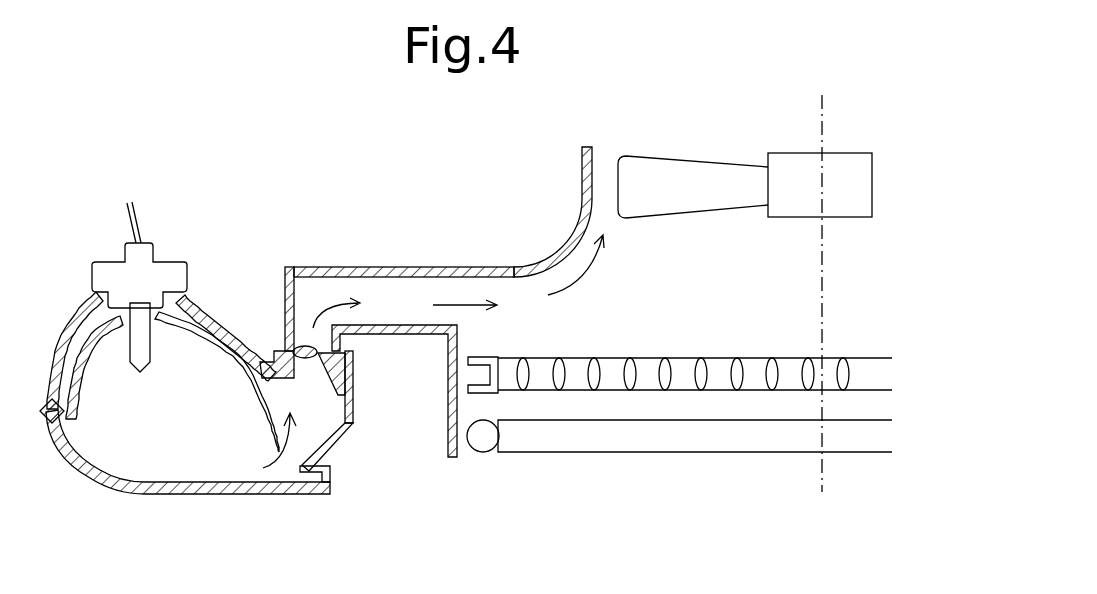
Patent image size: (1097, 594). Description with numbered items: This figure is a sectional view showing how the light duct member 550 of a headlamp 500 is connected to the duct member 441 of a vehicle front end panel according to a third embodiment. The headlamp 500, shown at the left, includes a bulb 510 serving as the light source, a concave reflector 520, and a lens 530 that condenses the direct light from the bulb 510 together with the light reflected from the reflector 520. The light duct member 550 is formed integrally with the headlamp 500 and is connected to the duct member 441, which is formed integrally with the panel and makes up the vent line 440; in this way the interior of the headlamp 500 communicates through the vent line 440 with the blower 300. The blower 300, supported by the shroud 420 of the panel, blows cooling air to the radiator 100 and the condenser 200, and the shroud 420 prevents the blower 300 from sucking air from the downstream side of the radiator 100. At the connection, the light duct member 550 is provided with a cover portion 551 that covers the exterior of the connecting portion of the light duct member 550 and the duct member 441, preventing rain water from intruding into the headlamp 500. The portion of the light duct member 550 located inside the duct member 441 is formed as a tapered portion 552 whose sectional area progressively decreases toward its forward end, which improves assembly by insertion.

The radiator 100 is at (690, 357).
The condenser 200 is at (727, 453).
The blower 300 is at (790, 218).
The shroud 420 is at (565, 240).
The vent line 440 is at (400, 305).
The duct member 441 is at (398, 334).
The headlamp 500 is at (205, 290).
The bulb 510 is at (88, 344).
The concave reflector 520 is at (210, 352).
The lens 530 is at (222, 497).
The light duct member 550 is at (352, 412).
The cover portion 551 is at (352, 358).
The tapered portion 552 is at (286, 345).